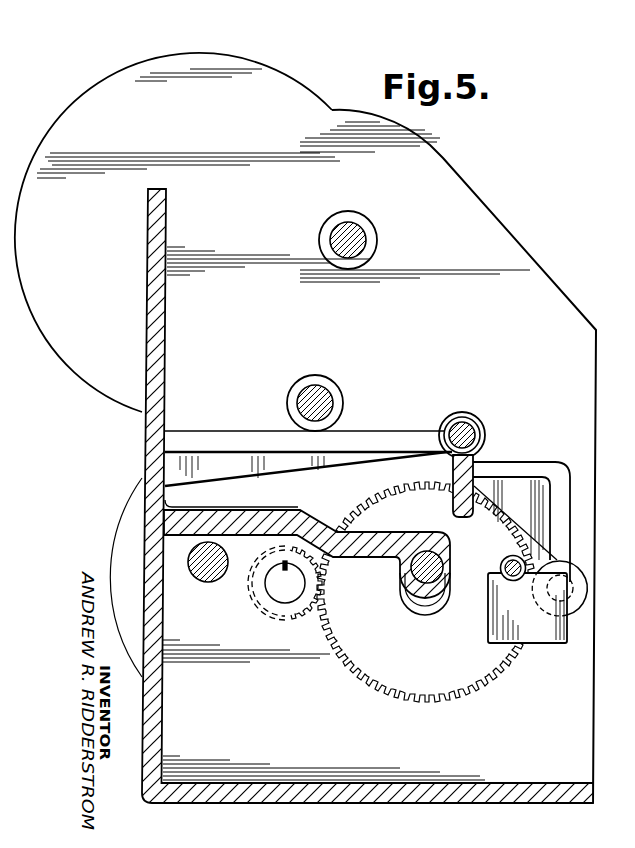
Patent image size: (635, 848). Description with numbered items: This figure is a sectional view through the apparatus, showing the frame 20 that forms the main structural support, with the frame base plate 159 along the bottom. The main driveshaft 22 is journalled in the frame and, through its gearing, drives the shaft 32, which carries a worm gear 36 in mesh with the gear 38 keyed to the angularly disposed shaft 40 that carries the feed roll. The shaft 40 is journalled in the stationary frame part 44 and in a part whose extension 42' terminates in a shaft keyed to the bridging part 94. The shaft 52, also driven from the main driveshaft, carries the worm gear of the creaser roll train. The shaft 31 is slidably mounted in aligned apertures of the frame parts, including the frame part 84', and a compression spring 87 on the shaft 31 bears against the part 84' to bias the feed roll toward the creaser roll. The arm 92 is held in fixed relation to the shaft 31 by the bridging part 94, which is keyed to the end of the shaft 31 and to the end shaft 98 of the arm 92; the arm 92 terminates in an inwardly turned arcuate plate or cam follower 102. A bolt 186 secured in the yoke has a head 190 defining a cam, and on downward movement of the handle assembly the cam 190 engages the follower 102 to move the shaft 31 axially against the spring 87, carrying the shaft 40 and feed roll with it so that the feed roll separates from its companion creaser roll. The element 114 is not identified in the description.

The frame 20 is at (236, 425).
The main driveshaft 22 is at (317, 398).
The shaft 52 is at (350, 225).
The shaft 31 is at (470, 424).
The compression spring 87 is at (456, 420).
The frame part 84' is at (308, 450).
The bridging part 94 is at (540, 470).
The extension 42' is at (435, 486).
The head 190 is at (509, 556).
The shaft 40 is at (441, 572).
The part 44 is at (314, 507).
The post 114 is at (212, 581).
The shaft 32 is at (280, 592).
The worm gear 36 is at (306, 612).
The gear 38 is at (365, 684).
The end shaft 98 is at (572, 595).
The arm 92 is at (568, 638).
The bolt 186 is at (522, 582).
The cam follower 102 is at (538, 637).
The frame base plate 159 is at (301, 786).